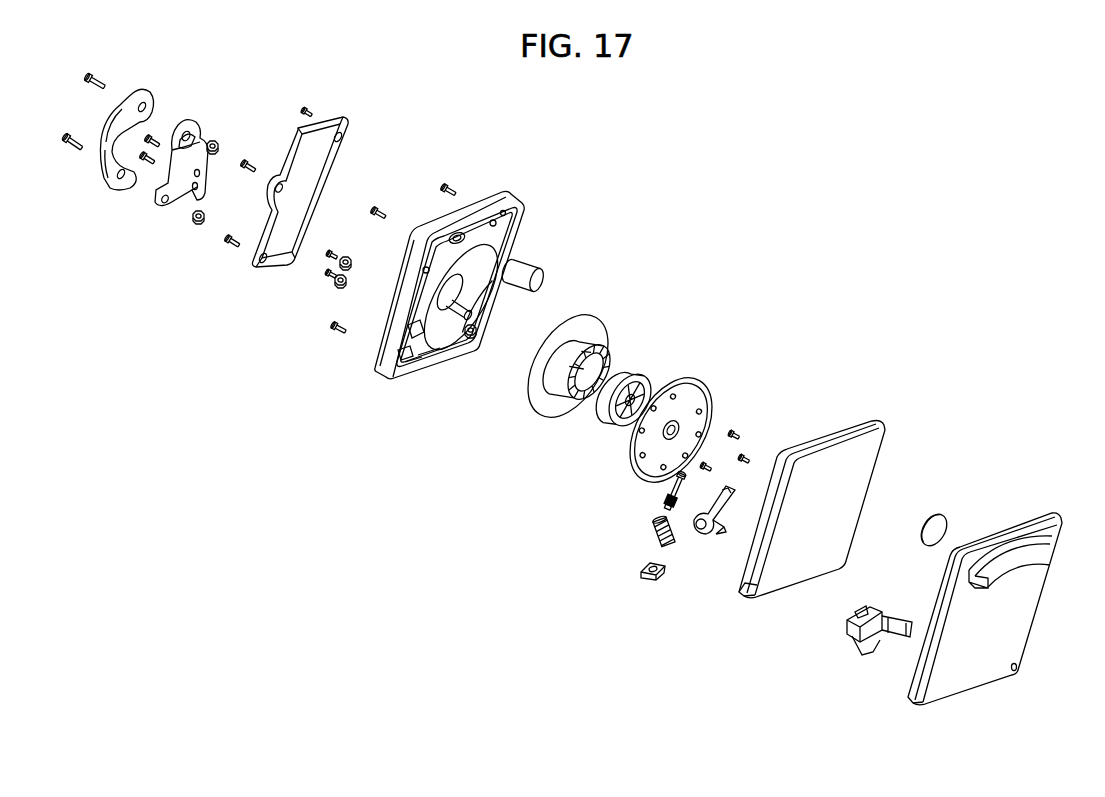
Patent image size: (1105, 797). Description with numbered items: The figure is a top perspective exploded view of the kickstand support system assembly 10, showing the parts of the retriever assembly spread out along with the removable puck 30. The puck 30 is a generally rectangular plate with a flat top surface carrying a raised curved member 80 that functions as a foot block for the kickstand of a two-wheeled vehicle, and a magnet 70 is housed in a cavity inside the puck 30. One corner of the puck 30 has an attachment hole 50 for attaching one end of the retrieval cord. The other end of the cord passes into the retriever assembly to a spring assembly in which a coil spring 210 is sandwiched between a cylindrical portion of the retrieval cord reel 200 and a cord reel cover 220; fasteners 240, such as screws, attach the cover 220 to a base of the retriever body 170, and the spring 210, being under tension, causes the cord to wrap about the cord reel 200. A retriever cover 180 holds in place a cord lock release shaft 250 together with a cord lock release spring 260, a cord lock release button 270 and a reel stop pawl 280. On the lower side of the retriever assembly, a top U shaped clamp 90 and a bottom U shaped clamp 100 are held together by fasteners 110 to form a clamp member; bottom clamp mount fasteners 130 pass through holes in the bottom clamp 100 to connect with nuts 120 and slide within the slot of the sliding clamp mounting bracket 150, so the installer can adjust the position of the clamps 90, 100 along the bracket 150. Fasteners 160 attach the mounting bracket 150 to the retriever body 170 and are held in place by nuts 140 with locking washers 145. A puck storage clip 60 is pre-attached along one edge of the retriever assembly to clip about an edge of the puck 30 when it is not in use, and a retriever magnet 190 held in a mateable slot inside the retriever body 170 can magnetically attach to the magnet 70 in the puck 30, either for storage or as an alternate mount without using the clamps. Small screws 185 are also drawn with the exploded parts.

The kickstand support system assembly 10 is at (920, 183).
The removable puck 30 is at (937, 698).
The attachment hole 50 is at (1013, 673).
The puck storage clip 60 is at (863, 647).
The magnet 70 is at (938, 523).
The raised curved member 80 is at (1020, 560).
The top U shaped clamp 90 is at (135, 93).
The bottom U shaped clamp 100 is at (185, 137).
The fasteners 110 is at (97, 73).
The nuts 120 is at (213, 146).
The bottom clamp mount fasteners 130 is at (150, 165).
The nuts 140 is at (333, 283).
The locking washers 145 is at (323, 273).
The sliding clamp mounting bracket 150 is at (280, 267).
The fasteners 160 is at (303, 108).
The retriever body 170 is at (377, 370).
The retriever cover 180 is at (763, 587).
The screw 185 is at (448, 185).
The retriever magnet 190 is at (522, 270).
The retrieval cord reel 200 is at (540, 402).
The coil spring 210 is at (607, 422).
The cord reel cover 220 is at (700, 385).
The fasteners 240 is at (745, 455).
The cord lock release shaft 250 is at (670, 493).
The cord lock release spring 260 is at (657, 535).
The cord lock release button 270 is at (648, 575).
The reel stop pawl 280 is at (713, 530).